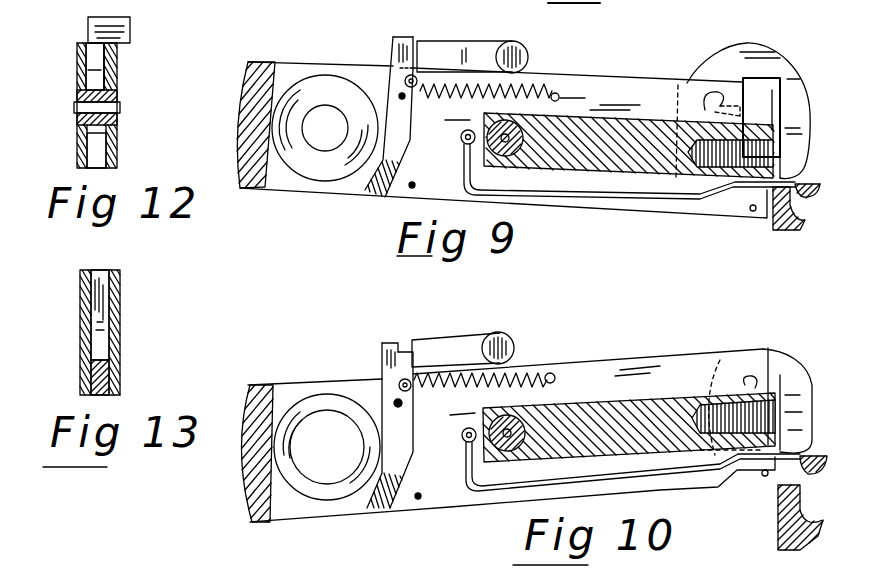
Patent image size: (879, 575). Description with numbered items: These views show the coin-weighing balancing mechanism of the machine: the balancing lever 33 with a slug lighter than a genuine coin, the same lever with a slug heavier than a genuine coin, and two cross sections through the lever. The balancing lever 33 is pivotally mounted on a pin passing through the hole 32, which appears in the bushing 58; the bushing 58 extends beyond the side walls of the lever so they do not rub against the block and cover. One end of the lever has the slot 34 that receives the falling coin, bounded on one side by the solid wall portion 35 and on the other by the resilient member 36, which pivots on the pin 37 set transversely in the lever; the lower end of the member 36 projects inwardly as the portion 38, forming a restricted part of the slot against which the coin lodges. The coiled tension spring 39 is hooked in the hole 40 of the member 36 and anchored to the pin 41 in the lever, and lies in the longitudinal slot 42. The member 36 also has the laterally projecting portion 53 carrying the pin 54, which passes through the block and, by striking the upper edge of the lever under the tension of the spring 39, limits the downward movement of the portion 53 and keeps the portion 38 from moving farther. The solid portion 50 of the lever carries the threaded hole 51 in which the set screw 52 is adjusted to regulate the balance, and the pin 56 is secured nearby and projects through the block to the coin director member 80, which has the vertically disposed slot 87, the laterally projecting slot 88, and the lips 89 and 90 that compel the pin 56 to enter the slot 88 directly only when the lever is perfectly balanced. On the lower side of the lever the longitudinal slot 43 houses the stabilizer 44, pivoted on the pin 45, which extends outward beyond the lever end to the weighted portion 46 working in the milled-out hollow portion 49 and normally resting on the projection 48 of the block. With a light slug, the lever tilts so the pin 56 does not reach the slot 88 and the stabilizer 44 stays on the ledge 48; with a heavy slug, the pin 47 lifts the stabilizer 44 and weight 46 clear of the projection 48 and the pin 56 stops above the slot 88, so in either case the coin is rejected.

In FIG. 12, the hole 32 is at (120, 108).
In FIG. 9, the hole 32 is at (520, 112).
In FIG. 10, the hole 32 is at (512, 416).
In FIG. 12, the balancing lever 33 is at (76, 76).
In FIG. 13, the balancing lever 33 is at (120, 308).
In FIG. 9, the balancing lever 33 is at (340, 62).
In FIG. 10, the balancing lever 33 is at (290, 383).
In FIG. 13, the slot 34 is at (100, 282).
In FIG. 9, the slot 34 is at (285, 75).
In FIG. 10, the slot 34 is at (275, 388).
In FIG. 9, the solid wall portion 35 is at (272, 68).
In FIG. 10, the solid wall portion 35 is at (240, 400).
In FIG. 9, the resilient member 36 is at (397, 66).
In FIG. 10, the resilient member 36 is at (385, 380).
In FIG. 12, the pin 37 is at (120, 65).
In FIG. 9, the pin 37 is at (398, 94).
In FIG. 10, the pin 37 is at (394, 400).
In FIG. 13, the inwardly projecting portion 38 is at (100, 365).
In FIG. 9, the inwardly projecting portion 38 is at (370, 190).
In FIG. 10, the inwardly projecting portion 38 is at (372, 510).
In FIG. 9, the coiled tension spring 39 is at (553, 90).
In FIG. 10, the coiled tension spring 39 is at (530, 372).
In FIG. 9, the hole 40 is at (418, 84).
In FIG. 10, the hole 40 is at (408, 378).
In FIG. 9, the pin 41 is at (560, 90).
In FIG. 10, the pin 41 is at (560, 378).
In FIG. 12, the slot 42 is at (88, 57).
In FIG. 9, the slot 42 is at (585, 95).
In FIG. 10, the slot 42 is at (615, 368).
In FIG. 12, the slot 43 is at (100, 155).
In FIG. 9, the slot 43 is at (518, 188).
In FIG. 10, the slot 43 is at (520, 492).
In FIG. 9, the stabilizer 44 is at (578, 206).
In FIG. 10, the stabilizer 44 is at (700, 492).
In FIG. 9, the pin 45 is at (460, 135).
In FIG. 10, the pin 45 is at (463, 440).
In FIG. 9, the weighted portion 46 is at (805, 182).
In FIG. 10, the weighted portion 46 is at (814, 457).
In FIG. 9, the pin 47 is at (752, 212).
In FIG. 10, the pin 47 is at (763, 478).
In FIG. 9, the projection 48 is at (806, 160).
In FIG. 10, the projection 48 is at (800, 516).
In FIG. 9, the milled-out hollow portion 49 is at (797, 205).
In FIG. 10, the milled-out hollow portion 49 is at (782, 548).
In FIG. 9, the solid portion 50 is at (620, 130).
In FIG. 10, the solid portion 50 is at (672, 360).
In FIG. 9, the hole 51 is at (680, 130).
In FIG. 10, the hole 51 is at (725, 362).
In FIG. 9, the set screw 52 is at (714, 97).
In FIG. 10, the set screw 52 is at (768, 378).
In FIG. 12, the laterally projecting portion 53 is at (92, 36).
In FIG. 9, the laterally projecting portion 53 is at (455, 52).
In FIG. 10, the laterally projecting portion 53 is at (445, 345).
In FIG. 12, the pin 54 is at (115, 32).
In FIG. 9, the pin 54 is at (528, 43).
In FIG. 10, the pin 54 is at (512, 333).
In FIG. 9, the pin 56 is at (755, 136).
In FIG. 10, the pin 56 is at (748, 398).
In FIG. 12, the bushing 58 is at (118, 92).
In FIG. 9, the bushing 58 is at (500, 133).
In FIG. 10, the bushing 58 is at (500, 428).
In FIG. 9, the coin director member 80 is at (748, 111).
In FIG. 10, the coin director member 80 is at (787, 401).
In FIG. 9, the vertically disposed slot 87 is at (765, 82).
In FIG. 10, the vertically disposed slot 87 is at (782, 380).
In FIG. 9, the laterally projecting slot 88 is at (720, 82).
In FIG. 9, the lip 89 is at (752, 115).
In FIG. 9, the lip 90 is at (748, 116).